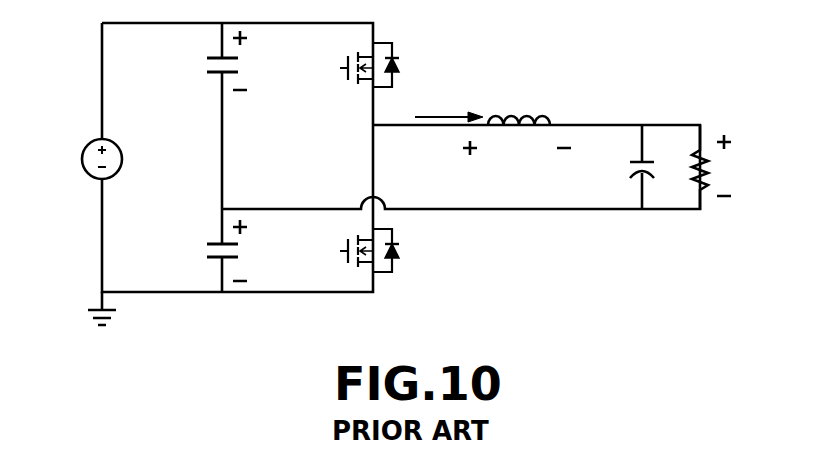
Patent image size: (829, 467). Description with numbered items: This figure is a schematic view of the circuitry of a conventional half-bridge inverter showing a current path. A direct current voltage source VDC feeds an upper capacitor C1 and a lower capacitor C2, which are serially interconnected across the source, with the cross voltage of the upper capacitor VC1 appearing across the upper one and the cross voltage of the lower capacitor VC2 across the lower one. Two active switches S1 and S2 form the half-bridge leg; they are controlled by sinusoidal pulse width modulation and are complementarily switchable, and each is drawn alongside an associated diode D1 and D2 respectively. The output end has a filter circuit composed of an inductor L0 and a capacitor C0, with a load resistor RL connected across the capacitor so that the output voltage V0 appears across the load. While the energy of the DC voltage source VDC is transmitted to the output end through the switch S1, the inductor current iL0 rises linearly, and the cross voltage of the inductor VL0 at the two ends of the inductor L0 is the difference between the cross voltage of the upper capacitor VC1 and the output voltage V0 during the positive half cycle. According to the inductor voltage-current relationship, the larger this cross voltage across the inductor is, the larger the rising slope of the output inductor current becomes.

The direct current voltage source VDC is at (74, 159).
The upper capacitor C1 is at (207, 66).
The cross voltage of the upper capacitor VC1 is at (258, 60).
The lower capacitor C2 is at (205, 251).
The cross voltage of the lower capacitor VC2 is at (253, 250).
The active switch S1 is at (344, 68).
The first diode D1 is at (400, 65).
The active switch S2 is at (343, 251).
The second diode D2 is at (400, 250).
The inductor current iL0 is at (449, 105).
The inductor L0 is at (519, 104).
The cross voltage of the inductor VL0 is at (517, 149).
The capacitor C0 is at (627, 167).
The load resistor RL is at (683, 167).
The output voltage V0 is at (730, 165).